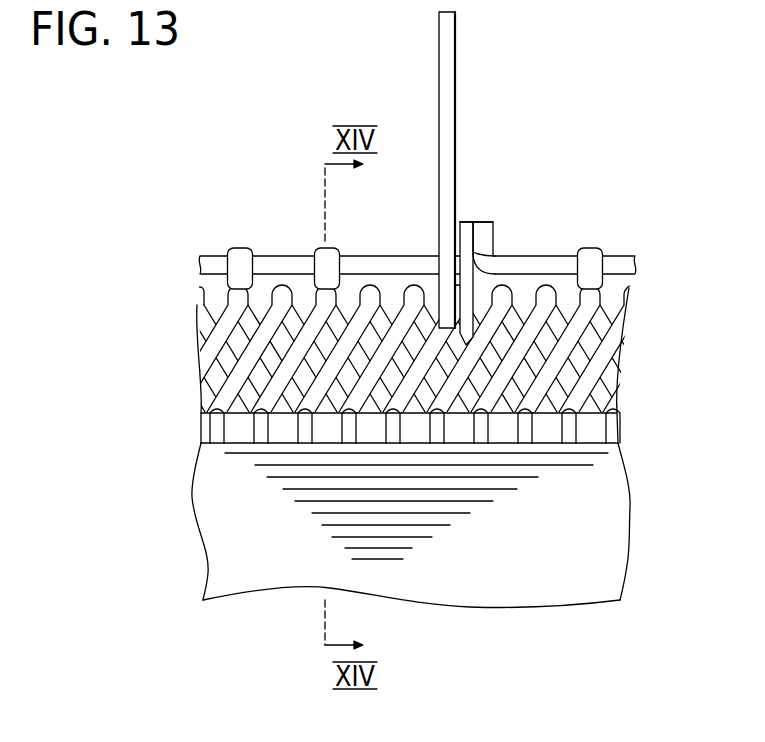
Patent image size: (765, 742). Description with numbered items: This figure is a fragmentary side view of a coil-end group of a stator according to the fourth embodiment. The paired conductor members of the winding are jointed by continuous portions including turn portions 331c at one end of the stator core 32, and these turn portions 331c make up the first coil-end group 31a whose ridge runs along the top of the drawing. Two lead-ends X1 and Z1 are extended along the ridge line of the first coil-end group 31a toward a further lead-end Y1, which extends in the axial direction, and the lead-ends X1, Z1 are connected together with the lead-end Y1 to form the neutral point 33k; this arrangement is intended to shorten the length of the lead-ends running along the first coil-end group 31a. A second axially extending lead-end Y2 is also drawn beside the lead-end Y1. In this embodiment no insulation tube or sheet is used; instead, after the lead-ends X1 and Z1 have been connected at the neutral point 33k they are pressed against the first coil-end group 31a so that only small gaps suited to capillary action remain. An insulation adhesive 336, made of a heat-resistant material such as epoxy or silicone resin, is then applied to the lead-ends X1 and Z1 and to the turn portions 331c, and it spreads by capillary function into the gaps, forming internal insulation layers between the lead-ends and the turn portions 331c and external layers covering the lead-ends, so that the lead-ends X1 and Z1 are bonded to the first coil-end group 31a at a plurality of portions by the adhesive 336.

The first coil-end group 31a is at (187, 286).
The turn portions 331c is at (203, 322).
The insulation adhesive 336 is at (325, 249).
The stator core 32 is at (605, 513).
The neutral point 33k is at (482, 218).
The lead-end X1 is at (396, 266).
The lead-end Y1 is at (467, 287).
The vertical wire Y2 is at (447, 62).
The lead-end Z1 is at (617, 263).